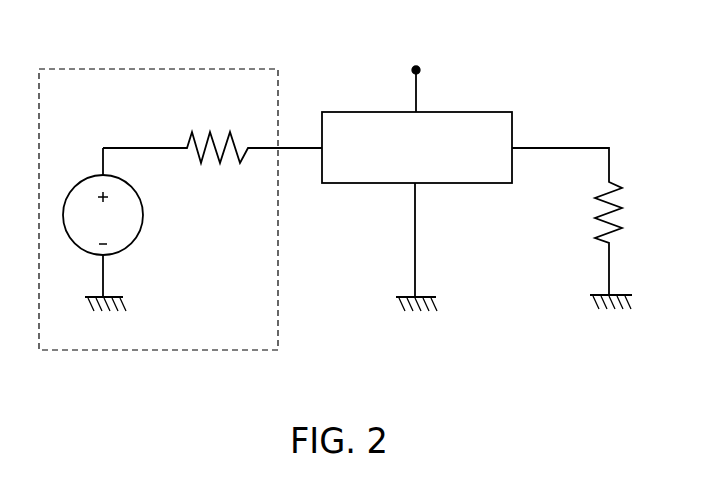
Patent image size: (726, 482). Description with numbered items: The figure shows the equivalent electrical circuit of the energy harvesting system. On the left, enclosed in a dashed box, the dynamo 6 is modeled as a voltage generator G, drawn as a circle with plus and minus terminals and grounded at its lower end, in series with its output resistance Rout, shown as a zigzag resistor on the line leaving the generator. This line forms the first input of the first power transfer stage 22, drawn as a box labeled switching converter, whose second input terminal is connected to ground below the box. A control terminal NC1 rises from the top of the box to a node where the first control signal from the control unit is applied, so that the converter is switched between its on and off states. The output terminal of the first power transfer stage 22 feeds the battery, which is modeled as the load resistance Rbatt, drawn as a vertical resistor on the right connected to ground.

The dynamo 6 is at (180, 185).
The first power transfer stage 22 is at (421, 176).
The voltage generator G is at (131, 233).
The output resistance Rout is at (212, 136).
The control terminal NC1 is at (435, 77).
The load resistance Rbatt is at (586, 228).